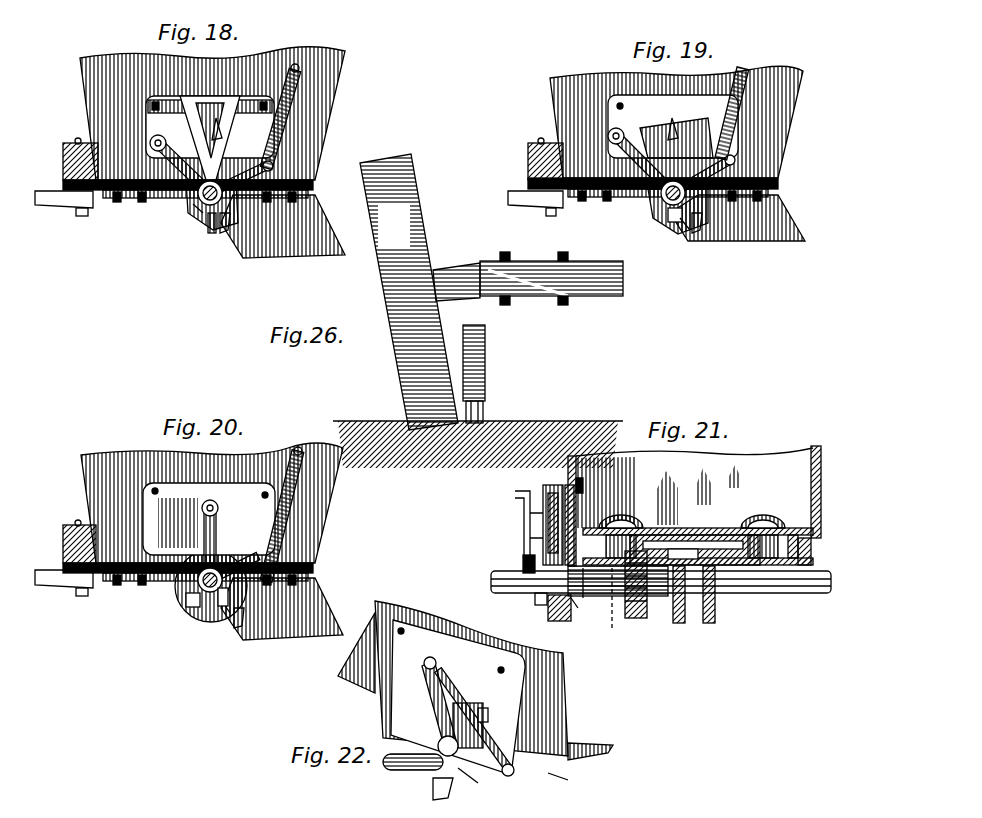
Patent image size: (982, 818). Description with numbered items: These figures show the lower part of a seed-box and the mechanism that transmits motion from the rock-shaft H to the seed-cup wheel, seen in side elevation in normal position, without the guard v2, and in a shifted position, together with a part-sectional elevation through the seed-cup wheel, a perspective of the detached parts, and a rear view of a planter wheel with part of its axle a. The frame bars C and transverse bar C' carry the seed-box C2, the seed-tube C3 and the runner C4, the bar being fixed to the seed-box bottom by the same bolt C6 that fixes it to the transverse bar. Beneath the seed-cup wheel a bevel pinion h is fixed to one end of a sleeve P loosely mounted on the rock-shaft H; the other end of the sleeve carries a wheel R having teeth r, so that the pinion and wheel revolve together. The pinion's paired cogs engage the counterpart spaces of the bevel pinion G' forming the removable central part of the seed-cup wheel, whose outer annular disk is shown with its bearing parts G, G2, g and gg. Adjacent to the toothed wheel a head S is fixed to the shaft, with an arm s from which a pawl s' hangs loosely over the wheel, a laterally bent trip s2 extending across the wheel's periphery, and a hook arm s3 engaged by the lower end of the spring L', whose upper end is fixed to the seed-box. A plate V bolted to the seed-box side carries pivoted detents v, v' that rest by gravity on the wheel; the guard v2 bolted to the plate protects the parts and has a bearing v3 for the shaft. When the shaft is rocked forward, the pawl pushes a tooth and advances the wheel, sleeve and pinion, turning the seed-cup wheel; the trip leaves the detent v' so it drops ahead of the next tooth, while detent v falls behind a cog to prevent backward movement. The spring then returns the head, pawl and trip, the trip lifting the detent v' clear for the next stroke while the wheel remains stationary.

In FIG. 18, the hopper frame bar C is at (174, 205).
In FIG. 19, the hopper frame bar C is at (642, 203).
In FIG. 20, the hopper frame bar C is at (174, 589).
In FIG. 18, the frame block C' is at (69, 151).
In FIG. 19, the frame block C' is at (533, 154).
In FIG. 20, the frame block C' is at (66, 544).
In FIG. 18, the hopper wall C2 is at (322, 90).
In FIG. 19, the hopper wall C2 is at (782, 100).
In FIG. 20, the hopper wall C2 is at (80, 460).
In FIG. 21, the hopper wall C2 is at (813, 452).
In FIG. 22, the hopper wall C2 is at (565, 690).
In FIG. 18, the hopper bracket leg C3 is at (283, 234).
In FIG. 19, the hopper bracket leg C3 is at (782, 204).
In FIG. 20, the hopper bracket leg C3 is at (316, 604).
In FIG. 26, the hopper bracket leg C3 is at (478, 350).
In FIG. 21, the hopper bracket leg C3 is at (698, 616).
In FIG. 26, the post base C4 is at (476, 405).
In FIG. 18, the frame lug C6 is at (70, 130).
In FIG. 19, the frame lug C6 is at (534, 130).
In FIG. 20, the frame lug C6 is at (70, 512).
In FIG. 18, the plate V is at (145, 118).
In FIG. 19, the plate V is at (626, 96).
In FIG. 20, the plate V is at (170, 478).
In FIG. 21, the plate V is at (640, 495).
In FIG. 22, the plate V is at (395, 676).
In FIG. 22, the detent v is at (423, 703).
In FIG. 18, the detent v' is at (240, 156).
In FIG. 19, the detent v' is at (703, 156).
In FIG. 20, the detent v' is at (238, 548).
In FIG. 21, the detent v' is at (514, 529).
In FIG. 18, the guard v2 is at (180, 108).
In FIG. 21, the guard v2 is at (517, 525).
In FIG. 18, the bearing v3 is at (185, 198).
In FIG. 21, the bearing v3 is at (520, 580).
In FIG. 18, the head S is at (185, 196).
In FIG. 19, the head S is at (642, 196).
In FIG. 20, the head S is at (182, 572).
In FIG. 21, the head S is at (535, 540).
In FIG. 22, the head S is at (430, 715).
In FIG. 19, the arm s is at (642, 156).
In FIG. 21, the arm s is at (529, 523).
In FIG. 22, the arm s is at (449, 677).
In FIG. 20, the pawl s' is at (225, 540).
In FIG. 22, the pawl s' is at (474, 707).
In FIG. 18, the trip s2 is at (214, 130).
In FIG. 19, the trip s2 is at (668, 134).
In FIG. 20, the trip s2 is at (216, 600).
In FIG. 21, the trip s2 is at (596, 629).
In FIG. 22, the trip s2 is at (486, 704).
In FIG. 18, the hook arm s3 is at (216, 224).
In FIG. 19, the hook arm s3 is at (688, 226).
In FIG. 20, the hook arm s3 is at (231, 620).
In FIG. 21, the hook arm s3 is at (533, 597).
In FIG. 22, the hook arm s3 is at (432, 790).
In FIG. 18, the rock-shaft H is at (200, 198).
In FIG. 19, the rock-shaft H is at (656, 200).
In FIG. 20, the rock-shaft H is at (196, 600).
In FIG. 21, the rock-shaft H is at (483, 574).
In FIG. 22, the rock-shaft H is at (395, 762).
In FIG. 19, the toothed wheel R is at (665, 214).
In FIG. 20, the toothed wheel R is at (180, 596).
In FIG. 21, the toothed wheel R is at (551, 619).
In FIG. 22, the toothed wheel R is at (455, 780).
In FIG. 18, the teeth r is at (204, 226).
In FIG. 19, the teeth r is at (674, 226).
In FIG. 20, the teeth r is at (208, 612).
In FIG. 21, the teeth r is at (560, 605).
In FIG. 22, the teeth r is at (472, 776).
In FIG. 21, the bevel pinion h is at (636, 606).
In FIG. 22, the bevel pinion h is at (548, 770).
In FIG. 18, the spring L' is at (313, 110).
In FIG. 19, the spring L' is at (769, 113).
In FIG. 20, the spring L' is at (306, 514).
In FIG. 21, the feed drum G is at (695, 535).
In FIG. 21, the bevel pinion G' is at (692, 532).
In FIG. 21, the drum end plate G2 is at (805, 532).
In FIG. 21, the bearing cap g is at (768, 580).
In FIG. 21, the bearing caps gg is at (760, 575).
In FIG. 21, the sleeve P is at (600, 588).
In FIG. 26, the axle a is at (486, 256).